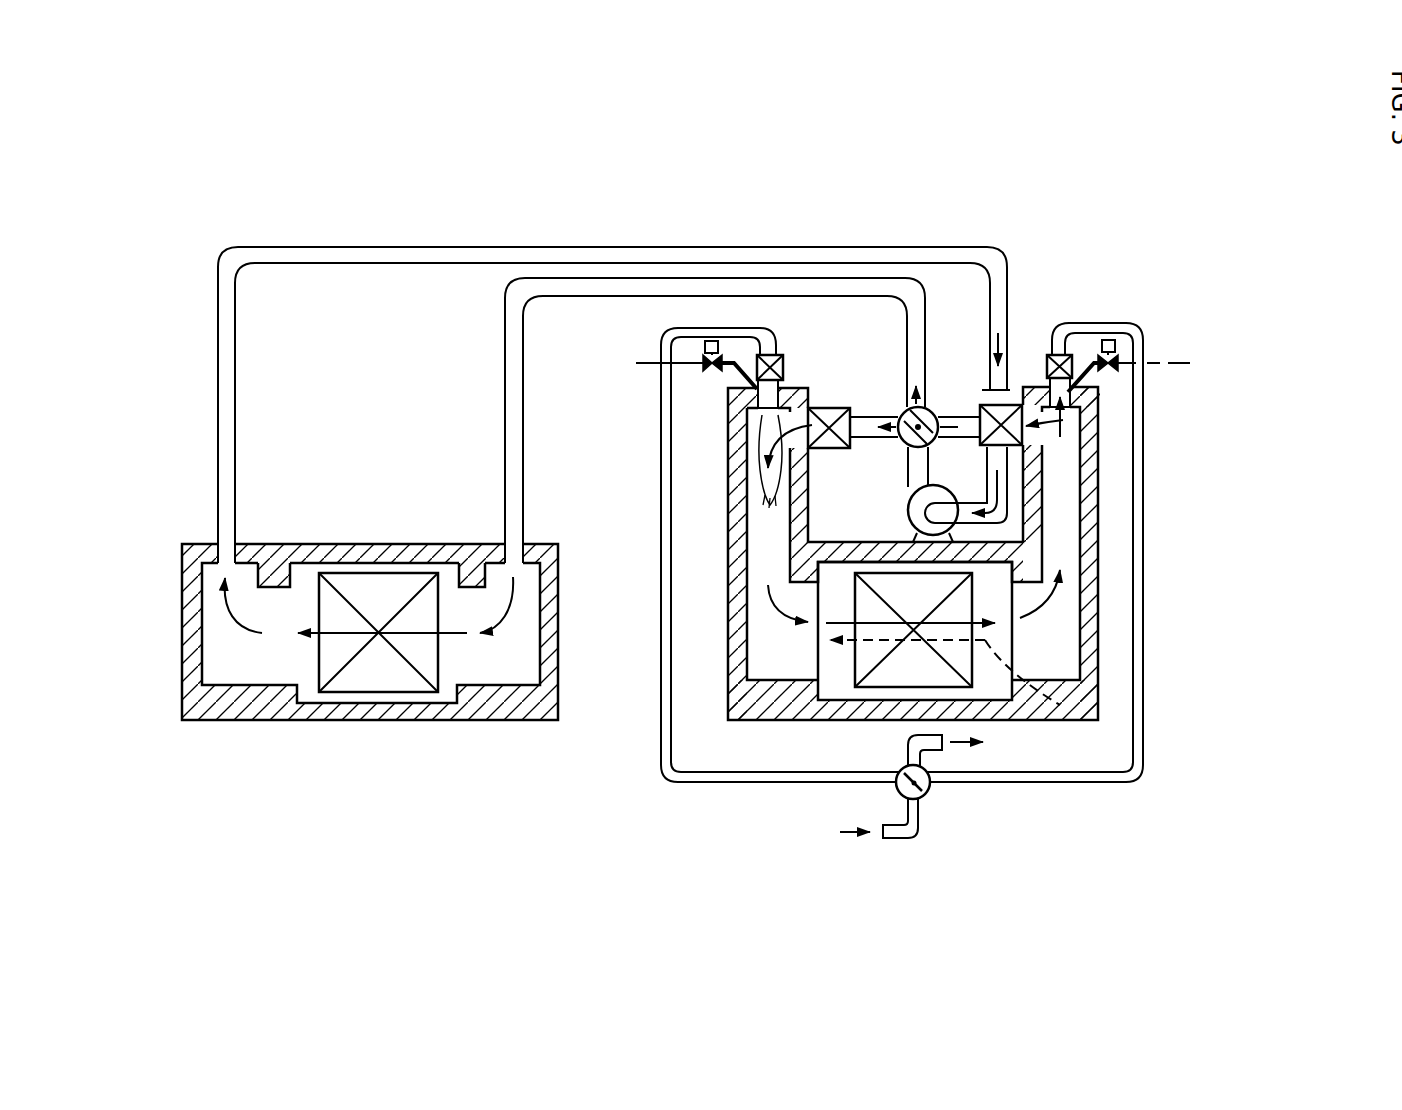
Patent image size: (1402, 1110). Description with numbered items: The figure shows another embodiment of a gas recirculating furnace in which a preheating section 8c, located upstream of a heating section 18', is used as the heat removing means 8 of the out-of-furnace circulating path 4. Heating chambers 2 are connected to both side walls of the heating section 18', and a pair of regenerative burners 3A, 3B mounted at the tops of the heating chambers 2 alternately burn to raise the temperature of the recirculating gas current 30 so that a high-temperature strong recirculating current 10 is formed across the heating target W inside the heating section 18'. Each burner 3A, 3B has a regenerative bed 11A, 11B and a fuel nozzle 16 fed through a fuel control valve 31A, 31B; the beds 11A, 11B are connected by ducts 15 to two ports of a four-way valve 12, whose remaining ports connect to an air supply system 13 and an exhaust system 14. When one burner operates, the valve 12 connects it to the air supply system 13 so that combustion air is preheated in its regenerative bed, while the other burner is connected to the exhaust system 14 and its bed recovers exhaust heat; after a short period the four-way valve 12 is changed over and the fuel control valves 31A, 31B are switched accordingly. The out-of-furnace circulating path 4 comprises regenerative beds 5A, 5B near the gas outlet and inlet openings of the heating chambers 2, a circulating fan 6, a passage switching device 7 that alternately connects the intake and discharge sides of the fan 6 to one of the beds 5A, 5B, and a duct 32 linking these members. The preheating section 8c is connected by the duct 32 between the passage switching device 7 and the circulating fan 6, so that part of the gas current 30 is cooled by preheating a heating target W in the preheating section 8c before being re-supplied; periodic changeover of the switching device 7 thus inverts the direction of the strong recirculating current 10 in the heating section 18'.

The heating chamber 2 is at (1068, 535).
The burner 3A is at (742, 408).
The burner 3B is at (1091, 373).
The out-of-furnace circulating path 4 is at (625, 351).
The regenerative bed 5A is at (832, 445).
The regenerative bed 5B is at (979, 447).
The circulating fan 6 is at (908, 508).
The passage switching device 7 is at (937, 405).
The heat removing means 8 is at (577, 611).
The preheating section 8c is at (310, 558).
The high-temperature strong recirculating current 10 is at (957, 627).
The regenerative bed 11A is at (800, 342).
The regenerative bed 11B is at (1052, 357).
The four-way valve 12 is at (925, 795).
The air supply system 13 is at (893, 840).
The exhaust system 14 is at (910, 750).
The duct 15 is at (718, 782).
The fuel nozzle 16 is at (740, 375).
The heating section 18' is at (914, 631).
The recirculating gas current 30 is at (262, 632).
The fuel control valve 31A is at (707, 335).
The fuel control valve 31B is at (1140, 343).
The duct 32 is at (695, 255).
The heating target W is at (365, 680).